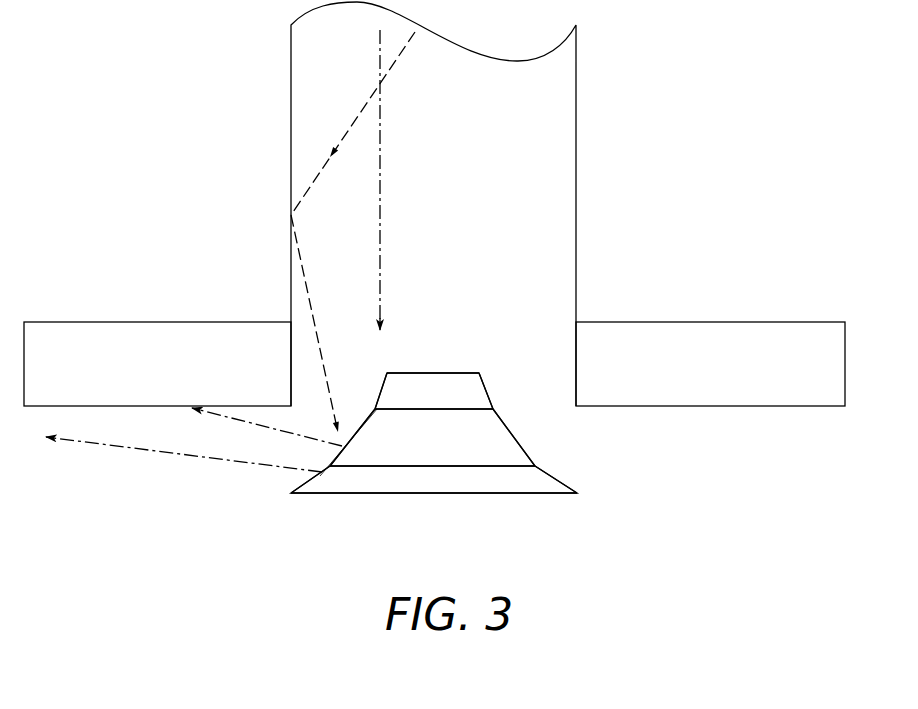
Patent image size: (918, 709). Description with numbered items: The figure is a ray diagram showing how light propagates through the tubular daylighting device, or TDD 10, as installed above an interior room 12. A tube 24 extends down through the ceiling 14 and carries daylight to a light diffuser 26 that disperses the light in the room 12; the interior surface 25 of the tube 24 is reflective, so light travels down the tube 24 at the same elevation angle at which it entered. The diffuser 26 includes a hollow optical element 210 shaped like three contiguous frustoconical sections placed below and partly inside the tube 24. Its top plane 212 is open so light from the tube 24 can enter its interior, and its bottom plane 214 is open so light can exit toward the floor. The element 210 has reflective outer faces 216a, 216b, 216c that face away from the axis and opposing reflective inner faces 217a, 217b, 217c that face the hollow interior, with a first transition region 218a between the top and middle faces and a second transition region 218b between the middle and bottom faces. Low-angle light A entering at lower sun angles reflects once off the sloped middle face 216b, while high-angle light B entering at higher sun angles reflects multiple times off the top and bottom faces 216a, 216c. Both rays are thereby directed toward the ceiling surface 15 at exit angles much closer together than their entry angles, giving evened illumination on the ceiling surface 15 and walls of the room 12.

The TDD 10 is at (684, 207).
The interior room 12 is at (703, 559).
The ceiling 14 is at (748, 322).
The ceiling surface 15 is at (160, 410).
The tube 24 is at (576, 143).
The interior surface 25 is at (574, 215).
The light diffuser 26 is at (655, 454).
The optical element 210 is at (460, 380).
The top plane 212 is at (424, 371).
The bottom plane 214 is at (530, 497).
The top outer face 216a is at (496, 387).
The middle outer face 216b is at (512, 430).
The bottom outer face 216c is at (567, 474).
The top inner face 217a is at (386, 388).
The middle inner face 217b is at (355, 441).
The bottom inner face 217c is at (327, 476).
The first transition region 218a is at (478, 410).
The second transition region 218b is at (528, 467).
The low-angle light A is at (357, 115).
The high-angle light B is at (381, 143).